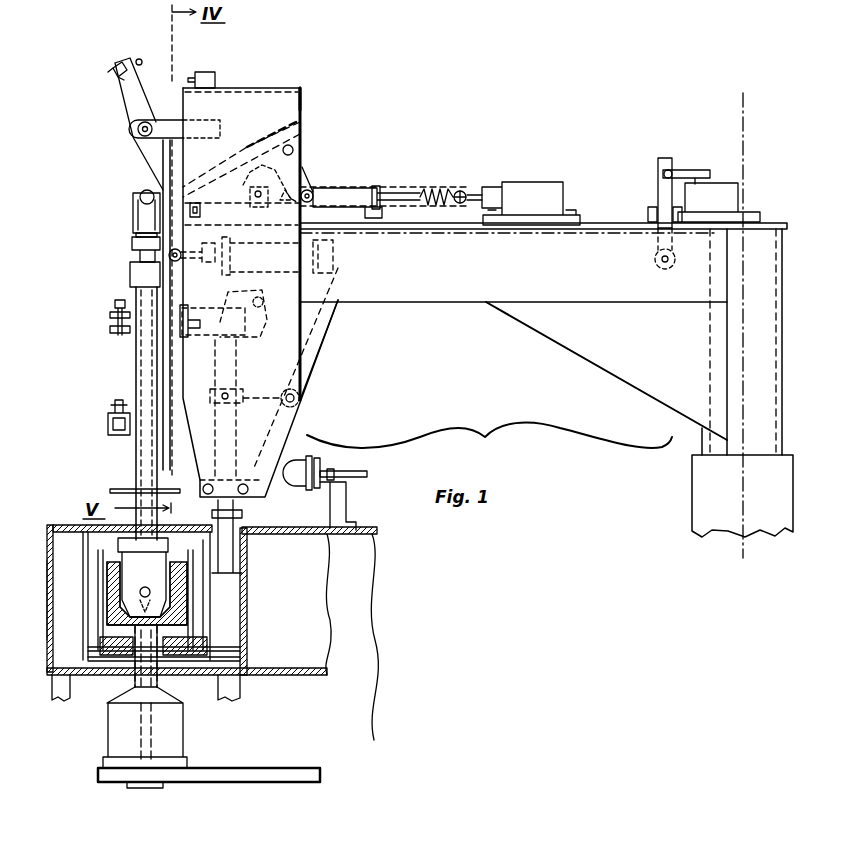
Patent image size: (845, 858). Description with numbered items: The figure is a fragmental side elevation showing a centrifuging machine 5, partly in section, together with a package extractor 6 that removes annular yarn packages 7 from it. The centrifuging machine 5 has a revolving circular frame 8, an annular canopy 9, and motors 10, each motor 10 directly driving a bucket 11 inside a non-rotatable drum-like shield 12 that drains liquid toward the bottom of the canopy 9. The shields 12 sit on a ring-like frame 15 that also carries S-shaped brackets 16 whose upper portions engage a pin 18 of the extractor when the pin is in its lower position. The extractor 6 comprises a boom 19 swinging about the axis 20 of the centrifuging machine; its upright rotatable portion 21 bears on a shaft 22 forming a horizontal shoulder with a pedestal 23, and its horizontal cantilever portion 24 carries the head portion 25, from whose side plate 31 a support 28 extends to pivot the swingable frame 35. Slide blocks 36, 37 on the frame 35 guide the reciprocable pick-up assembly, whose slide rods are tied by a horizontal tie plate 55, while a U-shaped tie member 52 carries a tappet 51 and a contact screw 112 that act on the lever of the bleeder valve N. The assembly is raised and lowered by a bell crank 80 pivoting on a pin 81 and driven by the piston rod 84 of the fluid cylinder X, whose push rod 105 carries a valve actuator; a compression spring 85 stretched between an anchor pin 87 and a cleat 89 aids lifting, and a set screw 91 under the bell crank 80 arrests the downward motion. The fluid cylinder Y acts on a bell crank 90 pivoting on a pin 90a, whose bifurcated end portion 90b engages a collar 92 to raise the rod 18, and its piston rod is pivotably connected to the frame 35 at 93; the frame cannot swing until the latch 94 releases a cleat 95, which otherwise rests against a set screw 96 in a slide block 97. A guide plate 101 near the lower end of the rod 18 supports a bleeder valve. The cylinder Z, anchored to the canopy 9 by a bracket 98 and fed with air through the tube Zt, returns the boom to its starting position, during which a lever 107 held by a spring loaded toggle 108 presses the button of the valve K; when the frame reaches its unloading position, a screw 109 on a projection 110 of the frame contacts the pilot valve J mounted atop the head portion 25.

The centrifuging machine 5 is at (378, 626).
The package extractor 6 is at (489, 443).
The annular yarn packages 7 is at (180, 558).
The revolving circular frame 8 is at (272, 767).
The annular canopy 9 is at (46, 655).
The motor 10 is at (178, 742).
The bucket 11 is at (105, 592).
The drum-like shield 12 is at (86, 538).
The ring-like frame 15 is at (228, 652).
The S-shaped bracket 16 is at (200, 603).
The pin 18 is at (233, 553).
The boom 19 is at (477, 327).
The axis 20 is at (745, 113).
The upright rotatable portion 21 is at (783, 360).
The shaft 22 is at (777, 298).
The pedestal 23 is at (787, 482).
The horizontal cantilever portion 24 is at (590, 300).
The head portion 25 is at (260, 118).
The support 28 is at (168, 122).
The side plate 31 is at (304, 100).
The swingable frame 35 is at (162, 189).
The slide block 36 is at (130, 271).
The slide block 37 is at (113, 412).
The tappet 51 is at (110, 330).
The U-shaped tie member 52 is at (110, 317).
The horizontal tie plate 55 is at (132, 243).
The bell crank 80 is at (301, 121).
The pin 81 is at (294, 151).
The piston rod 84 is at (480, 204).
The compression spring 85 is at (463, 190).
The anchor pin 87 is at (466, 192).
The cleat 89 is at (247, 190).
The bell crank 90 is at (326, 340).
The pin 90a is at (300, 398).
The end portion 90b is at (230, 420).
The set screw 91 is at (203, 212).
The collar 92 is at (207, 403).
The pivot connection 93 is at (180, 262).
The latch 94 is at (266, 292).
The cleat 95 is at (180, 335).
The set screw 96 is at (190, 337).
The slide block 97 is at (245, 340).
The bracket 98 is at (344, 490).
The guide plate 101 is at (242, 512).
The push rod 105 is at (397, 188).
The lever 107 is at (665, 157).
The spring loaded toggle 108 is at (680, 170).
The screw 109 is at (140, 58).
The projection 110 is at (132, 103).
The contact screw 112 is at (113, 303).
The pilot valve J is at (205, 72).
The valve K is at (652, 258).
The bleeder valve N is at (114, 433).
The fluid cylinder X is at (540, 183).
The fluid cylinder Y is at (333, 260).
The cylinder Z is at (308, 457).
The tube Zt is at (365, 469).